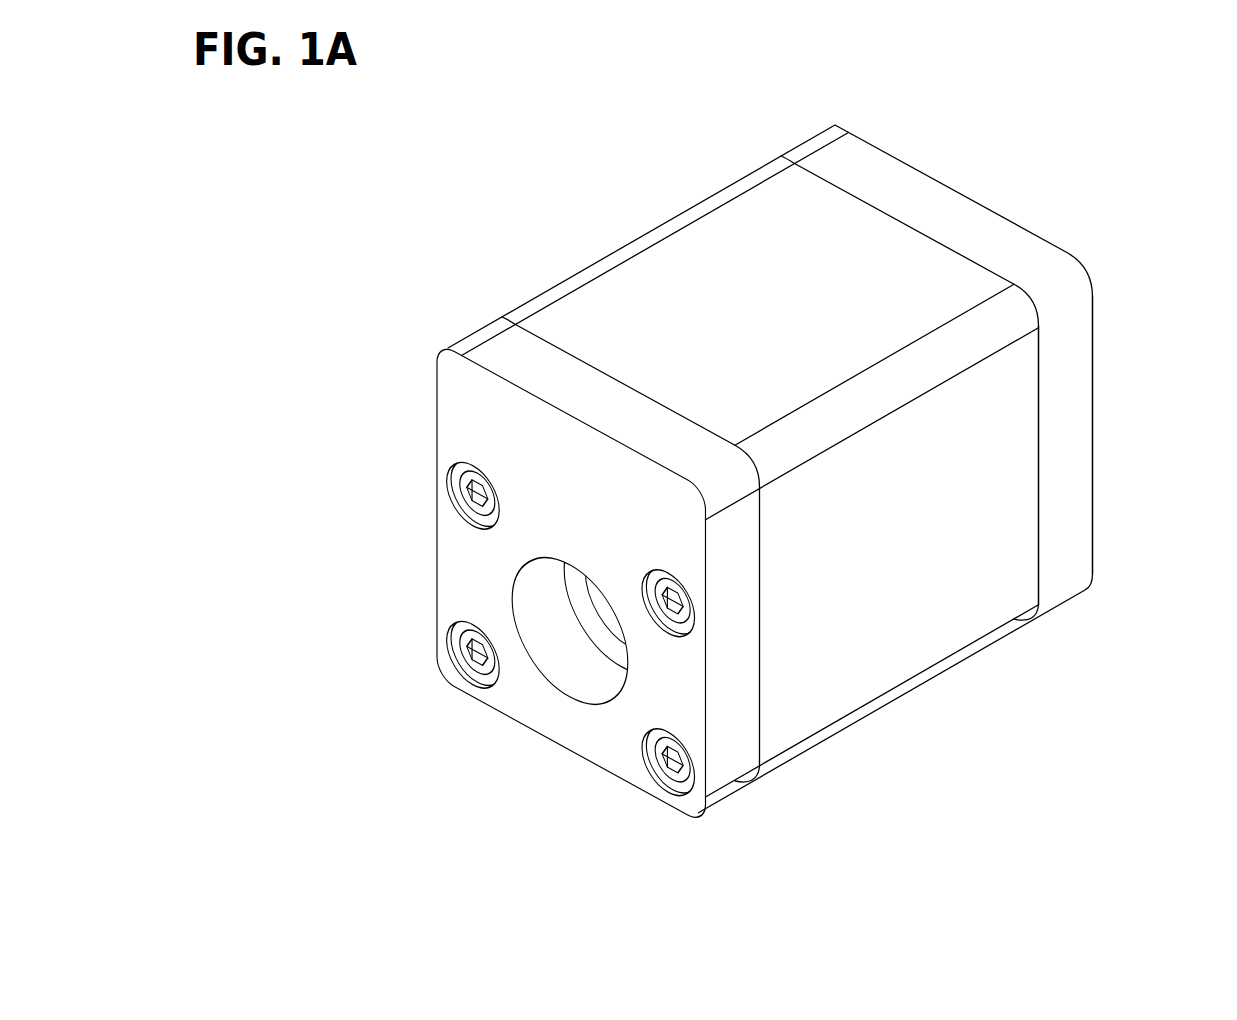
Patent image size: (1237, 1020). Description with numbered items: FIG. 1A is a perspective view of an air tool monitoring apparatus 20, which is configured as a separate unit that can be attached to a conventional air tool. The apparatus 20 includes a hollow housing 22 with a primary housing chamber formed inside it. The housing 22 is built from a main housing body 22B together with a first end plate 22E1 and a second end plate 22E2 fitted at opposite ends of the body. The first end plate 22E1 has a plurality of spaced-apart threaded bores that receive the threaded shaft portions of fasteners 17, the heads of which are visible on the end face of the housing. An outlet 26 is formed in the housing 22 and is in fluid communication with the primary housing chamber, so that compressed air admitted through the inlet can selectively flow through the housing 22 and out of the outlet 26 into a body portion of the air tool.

The air tool monitoring apparatus 20 is at (468, 260).
The housing 22 is at (913, 723).
The main housing body 22B is at (898, 567).
The first end plate 22E1 is at (1096, 402).
The second end plate 22E2 is at (447, 413).
The fasteners 17 is at (462, 644).
The outlet 26 is at (593, 656).